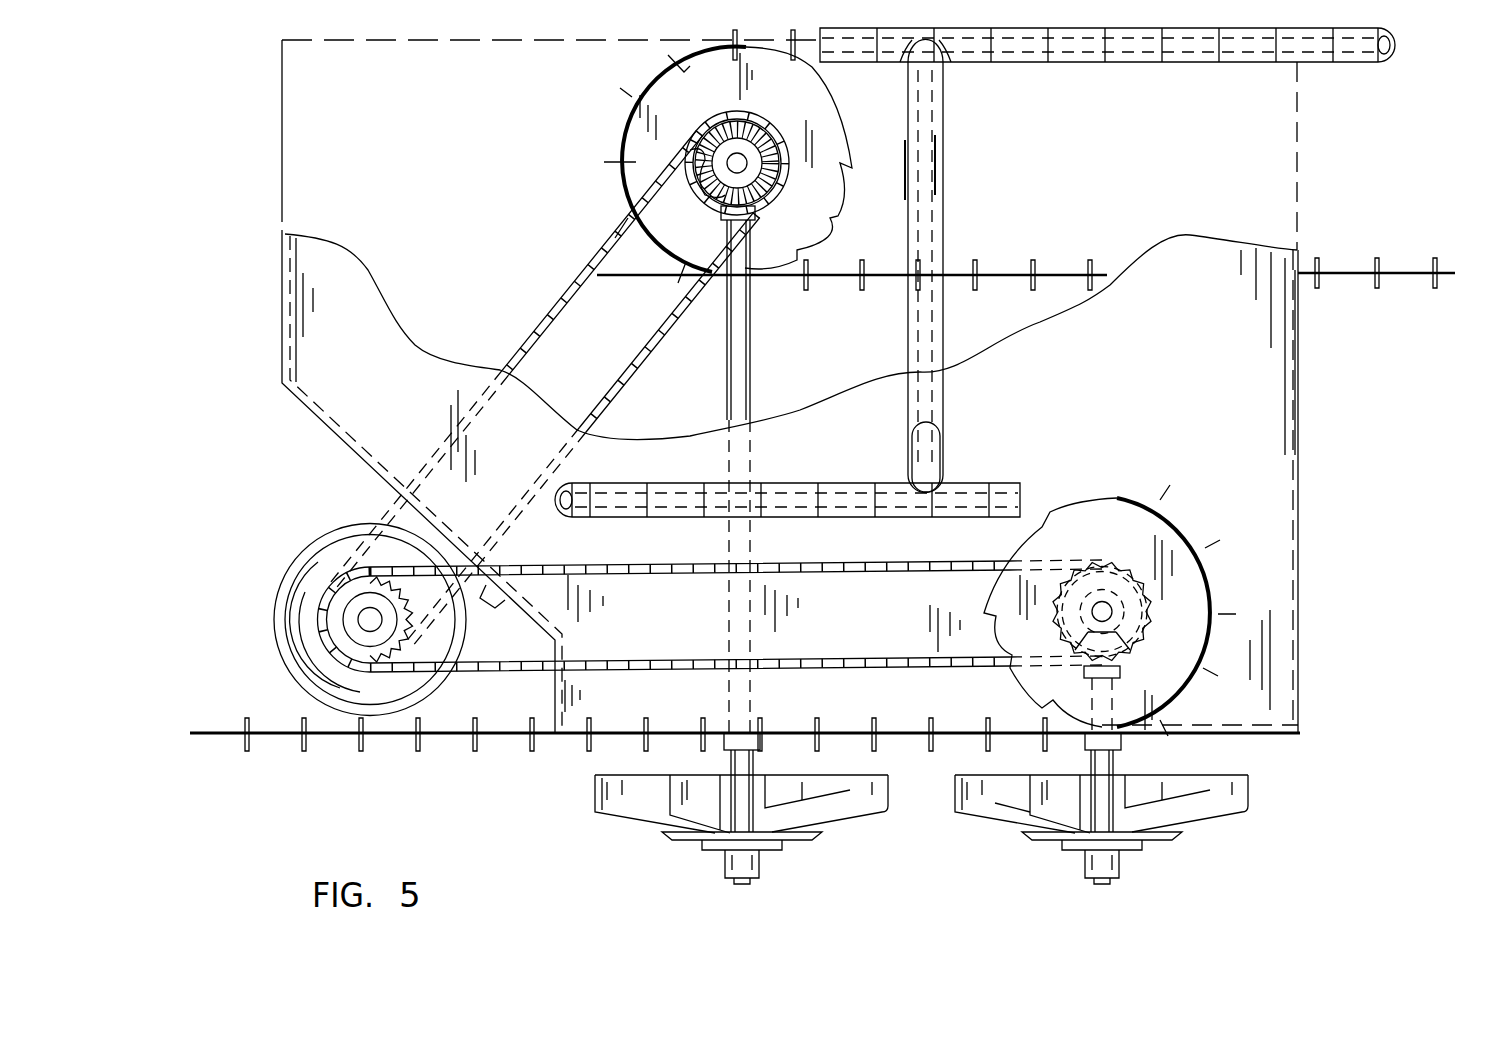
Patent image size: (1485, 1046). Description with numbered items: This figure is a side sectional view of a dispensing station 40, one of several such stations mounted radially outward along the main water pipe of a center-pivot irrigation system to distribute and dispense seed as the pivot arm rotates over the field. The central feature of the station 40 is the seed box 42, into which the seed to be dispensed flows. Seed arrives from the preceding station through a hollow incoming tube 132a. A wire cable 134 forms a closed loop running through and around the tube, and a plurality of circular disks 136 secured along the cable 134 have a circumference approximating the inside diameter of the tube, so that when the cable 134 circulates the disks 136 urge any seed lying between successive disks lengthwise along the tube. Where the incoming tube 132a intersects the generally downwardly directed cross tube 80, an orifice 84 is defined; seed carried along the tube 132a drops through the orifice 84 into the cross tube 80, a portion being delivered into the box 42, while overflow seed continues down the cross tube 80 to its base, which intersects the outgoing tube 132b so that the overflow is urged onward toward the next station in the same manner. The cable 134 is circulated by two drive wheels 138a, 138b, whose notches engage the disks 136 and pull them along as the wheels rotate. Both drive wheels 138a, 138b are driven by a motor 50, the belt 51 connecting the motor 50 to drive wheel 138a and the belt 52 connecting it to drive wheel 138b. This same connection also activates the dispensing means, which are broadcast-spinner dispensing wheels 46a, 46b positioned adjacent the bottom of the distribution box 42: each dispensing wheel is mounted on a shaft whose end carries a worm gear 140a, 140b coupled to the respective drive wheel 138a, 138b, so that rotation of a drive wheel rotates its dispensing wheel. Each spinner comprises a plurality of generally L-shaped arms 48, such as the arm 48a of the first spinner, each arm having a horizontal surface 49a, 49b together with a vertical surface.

The dispensing station 40 is at (243, 352).
The seed box 42 is at (330, 388).
The dispensing wheel 46a is at (705, 826).
The dispensing wheel 46b is at (1150, 824).
The L-shaped arm 48 is at (1258, 785).
The fan blade 48a is at (878, 813).
The fan blade 49a is at (840, 810).
The fan blade 49b is at (1003, 802).
The motor 50 is at (300, 544).
The belt 51 is at (560, 293).
The belt 52 is at (905, 672).
The cross tube 80 is at (930, 455).
The orifice 84 is at (943, 67).
The incoming tube 132a is at (1323, 62).
The outgoing tube 132b is at (593, 485).
The wire cable 134 is at (1340, 273).
The circular disk 136 is at (667, 55).
The drive wheel 138a is at (690, 128).
The drive wheel 138b is at (1197, 585).
The worm gear 140a is at (693, 218).
The worm gear 140b is at (1150, 662).